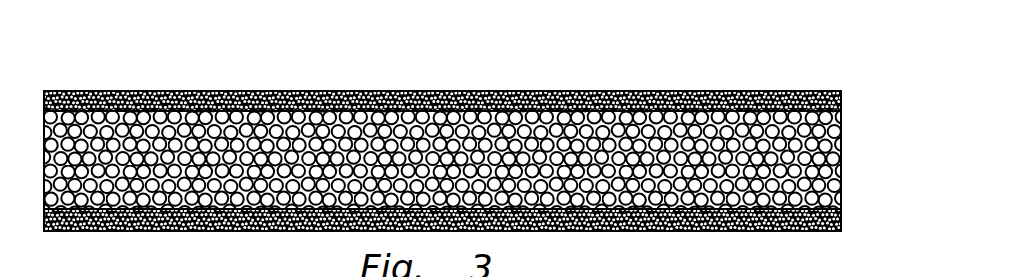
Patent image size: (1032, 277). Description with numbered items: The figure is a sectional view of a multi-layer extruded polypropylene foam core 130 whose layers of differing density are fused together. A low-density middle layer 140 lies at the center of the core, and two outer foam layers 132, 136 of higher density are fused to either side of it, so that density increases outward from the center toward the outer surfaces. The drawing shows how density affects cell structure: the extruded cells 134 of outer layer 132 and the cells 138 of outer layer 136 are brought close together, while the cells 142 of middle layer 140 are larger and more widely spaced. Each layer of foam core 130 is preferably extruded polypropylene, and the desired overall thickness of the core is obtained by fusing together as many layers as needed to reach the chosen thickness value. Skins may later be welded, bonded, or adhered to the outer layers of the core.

The multi-layer extruded polypropylene foam core 130 is at (484, 148).
The outer foam layer 132 is at (482, 77).
The extruded cells of outer layer 134 is at (815, 83).
The outer foam layer 136 is at (484, 232).
The cells of outer layer 138 is at (768, 223).
The middle layer 140 is at (484, 157).
The cells of middle layer 142 is at (834, 134).